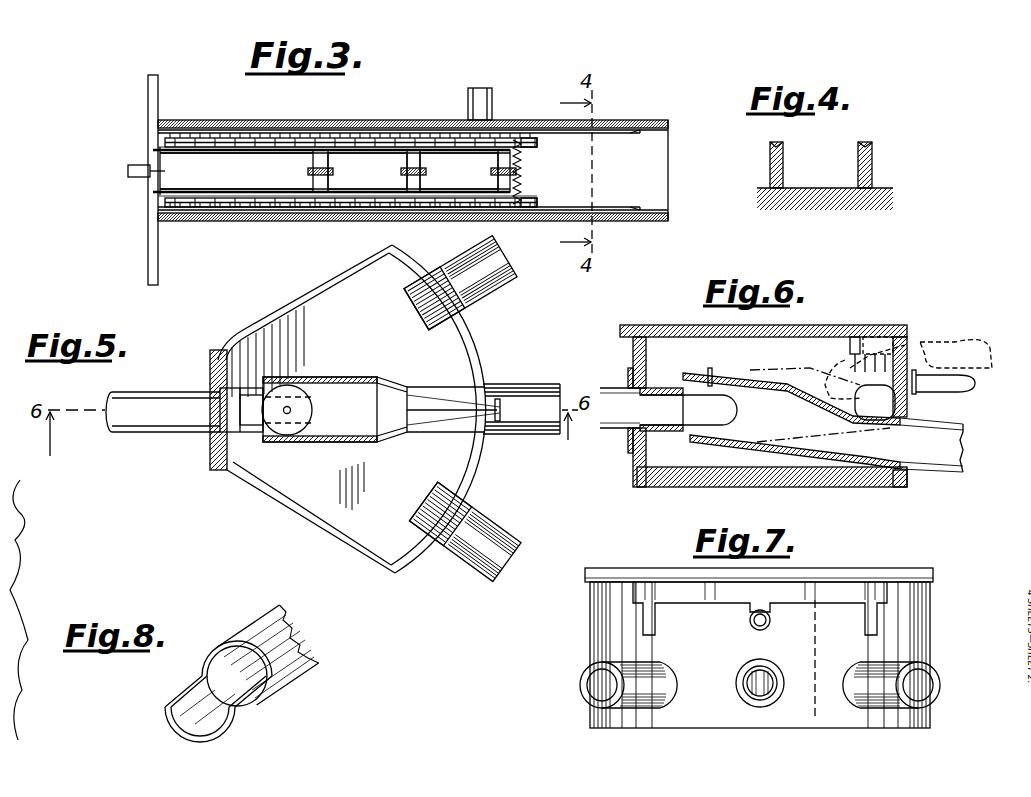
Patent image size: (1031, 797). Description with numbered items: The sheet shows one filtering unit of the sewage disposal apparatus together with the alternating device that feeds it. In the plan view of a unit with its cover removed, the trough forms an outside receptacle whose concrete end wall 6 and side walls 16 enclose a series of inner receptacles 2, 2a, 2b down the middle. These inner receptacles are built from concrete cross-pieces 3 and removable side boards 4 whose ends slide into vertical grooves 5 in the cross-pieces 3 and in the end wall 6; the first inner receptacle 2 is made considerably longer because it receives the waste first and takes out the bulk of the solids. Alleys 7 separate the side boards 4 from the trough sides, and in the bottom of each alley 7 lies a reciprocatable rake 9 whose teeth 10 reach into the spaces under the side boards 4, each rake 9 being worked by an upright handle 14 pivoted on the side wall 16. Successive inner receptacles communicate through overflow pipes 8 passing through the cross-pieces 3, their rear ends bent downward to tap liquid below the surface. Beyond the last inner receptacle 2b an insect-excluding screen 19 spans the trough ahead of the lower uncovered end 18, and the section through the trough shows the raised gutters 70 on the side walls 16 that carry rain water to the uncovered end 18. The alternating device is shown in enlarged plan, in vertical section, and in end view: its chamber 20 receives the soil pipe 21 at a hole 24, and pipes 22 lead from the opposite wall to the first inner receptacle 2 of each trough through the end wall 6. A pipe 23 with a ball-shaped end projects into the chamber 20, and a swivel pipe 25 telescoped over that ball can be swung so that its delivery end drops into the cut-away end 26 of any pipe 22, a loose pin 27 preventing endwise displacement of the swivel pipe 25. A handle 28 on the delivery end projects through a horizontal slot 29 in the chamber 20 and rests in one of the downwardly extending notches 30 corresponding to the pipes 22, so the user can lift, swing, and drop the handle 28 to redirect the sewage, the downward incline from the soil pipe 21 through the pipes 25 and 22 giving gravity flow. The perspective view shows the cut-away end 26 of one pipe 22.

In FIG. 3, the inner receptacle 2 is at (236, 171).
In FIG. 3, the inner receptacle 2a is at (367, 171).
In FIG. 3, the inner receptacle 2b is at (459, 171).
In FIG. 3, the cross-piece 3 is at (313, 163).
In FIG. 3, the side board 4 is at (400, 150).
In FIG. 3, the vertical groove 5 is at (318, 150).
In FIG. 3, the end wall 6 is at (158, 104).
In FIG. 3, the alley 7 is at (205, 140).
In FIG. 3, the pipe 8 is at (307, 173).
In FIG. 3, the rake 9 is at (352, 140).
In FIG. 3, the tooth 10 is at (250, 148).
In FIG. 3, the handle 14 is at (540, 141).
In FIG. 3, the side wall 16 is at (500, 119).
In FIG. 4, the side wall 16 is at (770, 168).
In FIG. 3, the lower uncovered end 18 is at (668, 172).
In FIG. 4, the lower uncovered end 18 is at (812, 188).
In FIG. 3, the insect-excluding screen 19 is at (524, 180).
In FIG. 3, the raised gutter 70 is at (640, 131).
In FIG. 4, the raised gutter 70 is at (781, 145).
In FIG. 5, the chamber 20 is at (300, 300).
In FIG. 6, the chamber 20 is at (648, 362).
In FIG. 7, the chamber 20 is at (932, 638).
In FIG. 5, the soil pipe 21 is at (172, 434).
In FIG. 6, the soil pipe 21 is at (622, 430).
In FIG. 5, the pipe 22 is at (508, 290).
In FIG. 6, the pipe 22 is at (962, 468).
In FIG. 7, the pipe 22 is at (672, 686).
In FIG. 8, the pipe 22 is at (300, 640).
In FIG. 5, the pipe 23 is at (252, 434).
In FIG. 6, the pipe 23 is at (686, 431).
In FIG. 5, the hole 24 is at (209, 388).
In FIG. 5, the swivel pipe 25 is at (377, 436).
In FIG. 6, the swivel pipe 25 is at (808, 394).
In FIG. 5, the cut-away end 26 is at (420, 312).
In FIG. 6, the cut-away end 26 is at (895, 440).
In FIG. 8, the cut-away end 26 is at (168, 715).
In FIG. 5, the pin 27 is at (292, 420).
In FIG. 6, the pin 27 is at (712, 372).
In FIG. 5, the handle 28 is at (548, 385).
In FIG. 6, the handle 28 is at (975, 386).
In FIG. 5, the horizontal slot 29 is at (483, 478).
In FIG. 6, the horizontal slot 29 is at (907, 345).
In FIG. 7, the horizontal slot 29 is at (832, 588).
In FIG. 5, the notch 30 is at (470, 322).
In FIG. 6, the notch 30 is at (920, 350).
In FIG. 7, the notch 30 is at (750, 620).